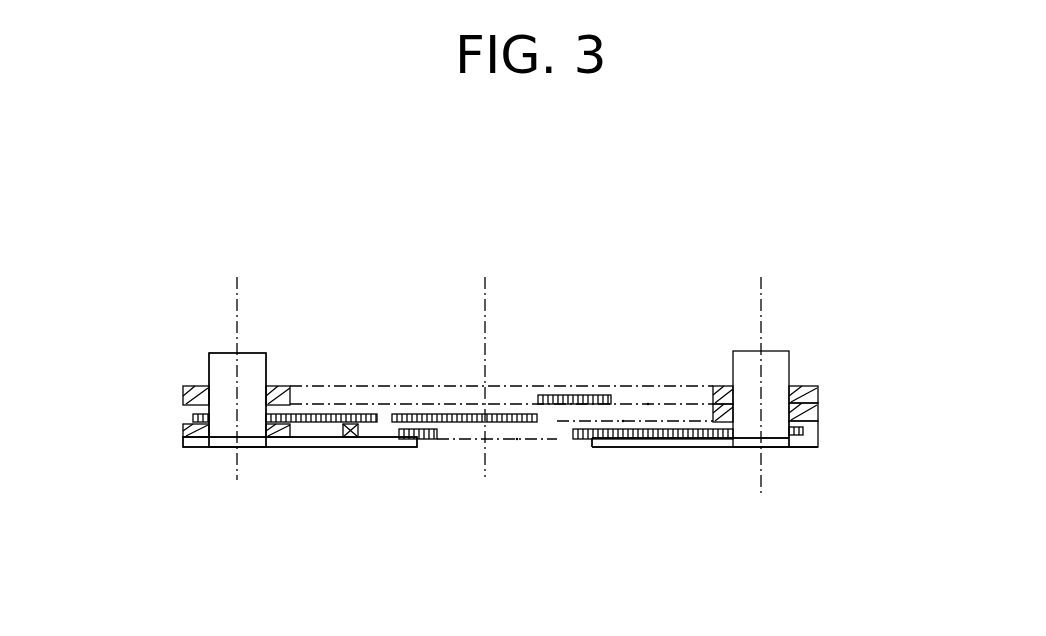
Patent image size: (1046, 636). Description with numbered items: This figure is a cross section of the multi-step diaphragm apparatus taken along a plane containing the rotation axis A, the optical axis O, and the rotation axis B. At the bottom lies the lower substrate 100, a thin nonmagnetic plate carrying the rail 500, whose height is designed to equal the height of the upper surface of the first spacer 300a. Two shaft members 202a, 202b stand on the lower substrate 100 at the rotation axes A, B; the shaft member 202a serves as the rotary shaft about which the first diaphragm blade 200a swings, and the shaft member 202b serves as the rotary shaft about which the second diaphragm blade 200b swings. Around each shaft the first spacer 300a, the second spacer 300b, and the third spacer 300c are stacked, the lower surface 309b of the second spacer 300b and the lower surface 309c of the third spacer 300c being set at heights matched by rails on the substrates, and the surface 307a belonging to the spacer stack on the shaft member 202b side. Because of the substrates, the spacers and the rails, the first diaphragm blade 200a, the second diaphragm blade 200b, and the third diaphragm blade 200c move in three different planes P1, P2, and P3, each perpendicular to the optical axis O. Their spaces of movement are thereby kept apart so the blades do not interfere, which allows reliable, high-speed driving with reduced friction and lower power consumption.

The lower substrate 100 is at (283, 432).
The first diaphragm blade 200a is at (427, 440).
The second diaphragm blade 200b is at (420, 415).
The third diaphragm blade 200c is at (562, 395).
The shaft member 202a is at (745, 372).
The shaft member 202b is at (247, 372).
The first spacer 300a is at (186, 430).
The second spacer 300b is at (187, 415).
The third spacer 300c is at (183, 385).
The shaft portion 307a is at (203, 388).
The lower surface 309b is at (200, 432).
The lower surface 309c is at (797, 432).
The rail 500 is at (348, 432).
The plane P1 is at (517, 440).
The plane P2 is at (623, 422).
The plane P3 is at (648, 404).
The rotation axis A is at (762, 372).
The rotation axis B is at (237, 364).
The optical axis O is at (485, 362).